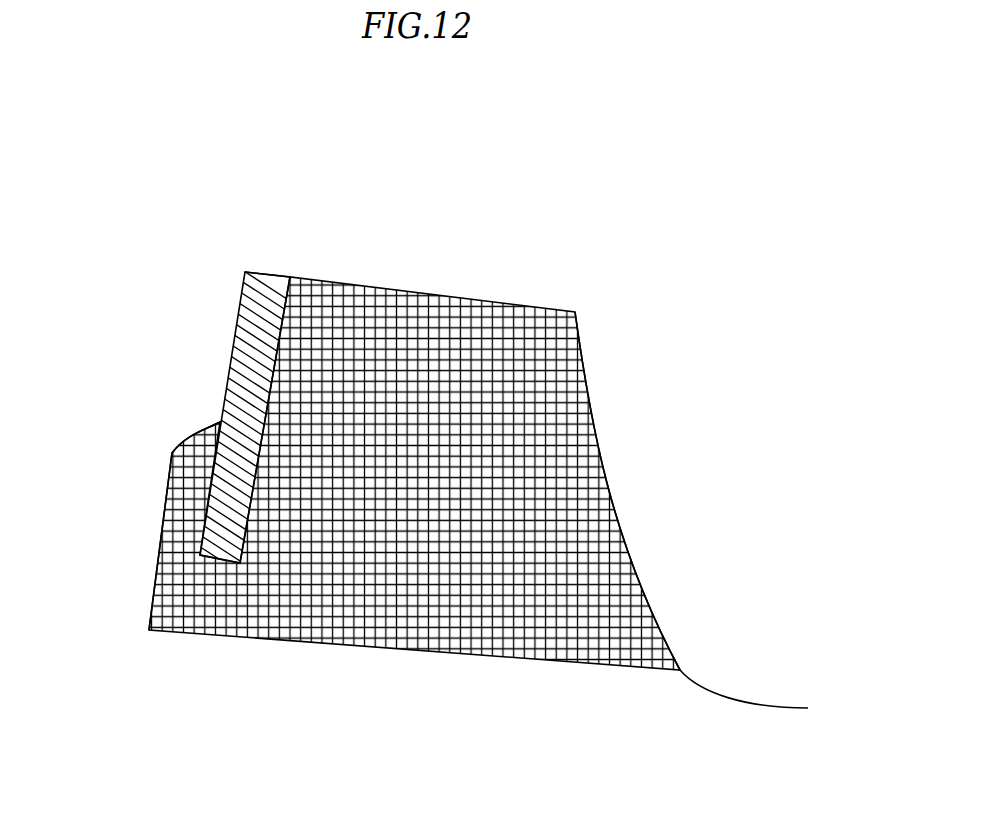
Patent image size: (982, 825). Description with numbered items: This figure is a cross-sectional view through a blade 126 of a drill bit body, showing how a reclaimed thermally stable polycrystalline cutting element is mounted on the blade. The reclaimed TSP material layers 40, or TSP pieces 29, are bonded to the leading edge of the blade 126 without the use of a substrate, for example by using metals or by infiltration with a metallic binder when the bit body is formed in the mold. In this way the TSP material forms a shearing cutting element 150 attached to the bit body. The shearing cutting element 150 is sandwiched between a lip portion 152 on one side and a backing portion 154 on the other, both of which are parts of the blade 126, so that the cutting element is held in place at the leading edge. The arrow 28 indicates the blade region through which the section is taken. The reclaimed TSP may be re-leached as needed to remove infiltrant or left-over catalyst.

The fin 28 is at (690, 576).
The TSP pieces 29 is at (205, 232).
The reclaimed TSP material layers 40 is at (270, 280).
The blade 126 is at (414, 442).
The shearing cutting element 150 is at (253, 328).
The lip portion 152 is at (183, 538).
The backing portion 154 is at (447, 378).